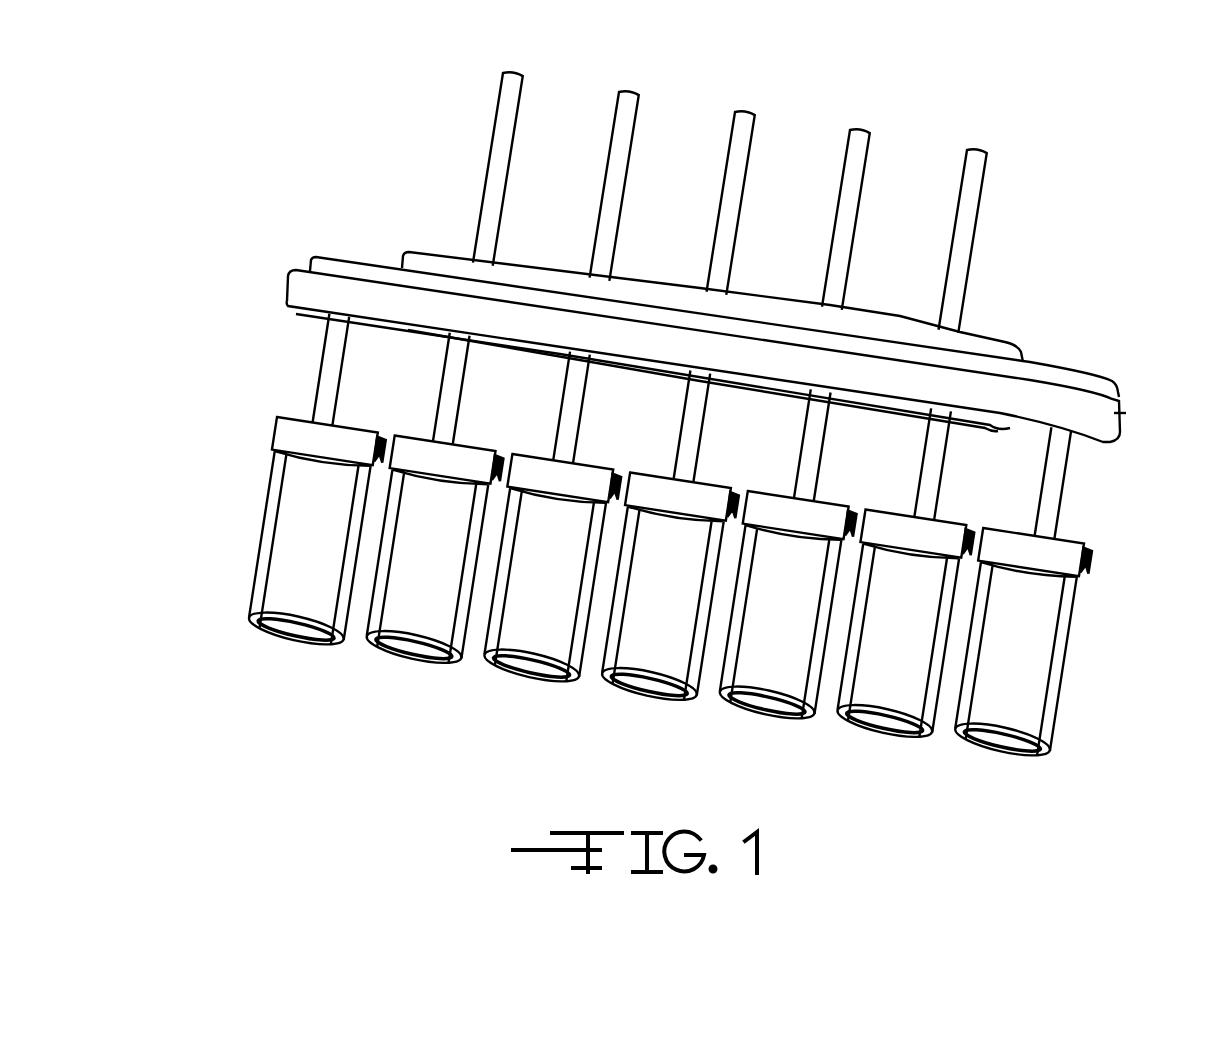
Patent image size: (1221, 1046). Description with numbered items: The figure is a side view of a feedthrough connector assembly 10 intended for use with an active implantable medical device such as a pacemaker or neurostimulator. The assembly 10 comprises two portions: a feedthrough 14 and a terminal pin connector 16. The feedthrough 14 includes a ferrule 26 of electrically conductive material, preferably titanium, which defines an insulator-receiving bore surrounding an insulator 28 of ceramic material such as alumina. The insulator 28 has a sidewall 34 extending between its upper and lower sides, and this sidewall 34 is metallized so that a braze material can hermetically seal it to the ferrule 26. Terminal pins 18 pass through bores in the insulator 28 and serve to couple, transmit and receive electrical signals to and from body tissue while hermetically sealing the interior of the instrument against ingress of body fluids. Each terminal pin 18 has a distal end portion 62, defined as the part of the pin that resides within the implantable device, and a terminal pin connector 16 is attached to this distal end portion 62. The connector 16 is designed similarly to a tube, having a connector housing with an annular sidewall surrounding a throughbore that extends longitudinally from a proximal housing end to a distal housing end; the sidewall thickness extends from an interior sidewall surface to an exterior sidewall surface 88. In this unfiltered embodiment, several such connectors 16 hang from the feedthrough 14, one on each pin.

The feedthrough connector assembly 10 is at (1060, 208).
The feedthrough 14 is at (338, 232).
The terminal pin connector 16 is at (258, 654).
The terminal pin 18 is at (637, 133).
The ferrule 26 is at (1122, 413).
The insulator 28 is at (430, 258).
The sidewall 34 is at (987, 347).
The distal end portion 62 is at (596, 410).
The exterior sidewall surface 88 is at (305, 545).